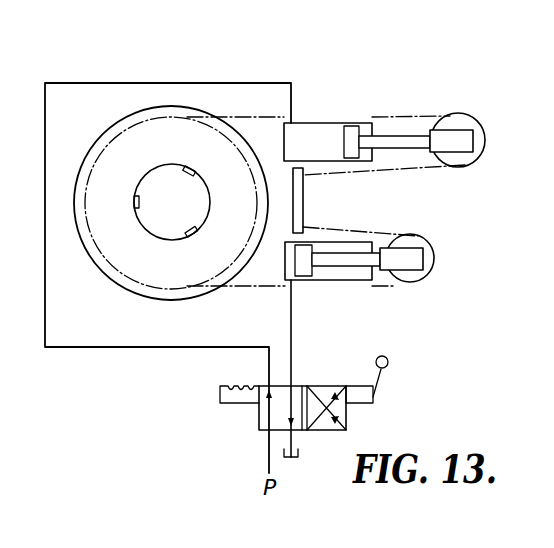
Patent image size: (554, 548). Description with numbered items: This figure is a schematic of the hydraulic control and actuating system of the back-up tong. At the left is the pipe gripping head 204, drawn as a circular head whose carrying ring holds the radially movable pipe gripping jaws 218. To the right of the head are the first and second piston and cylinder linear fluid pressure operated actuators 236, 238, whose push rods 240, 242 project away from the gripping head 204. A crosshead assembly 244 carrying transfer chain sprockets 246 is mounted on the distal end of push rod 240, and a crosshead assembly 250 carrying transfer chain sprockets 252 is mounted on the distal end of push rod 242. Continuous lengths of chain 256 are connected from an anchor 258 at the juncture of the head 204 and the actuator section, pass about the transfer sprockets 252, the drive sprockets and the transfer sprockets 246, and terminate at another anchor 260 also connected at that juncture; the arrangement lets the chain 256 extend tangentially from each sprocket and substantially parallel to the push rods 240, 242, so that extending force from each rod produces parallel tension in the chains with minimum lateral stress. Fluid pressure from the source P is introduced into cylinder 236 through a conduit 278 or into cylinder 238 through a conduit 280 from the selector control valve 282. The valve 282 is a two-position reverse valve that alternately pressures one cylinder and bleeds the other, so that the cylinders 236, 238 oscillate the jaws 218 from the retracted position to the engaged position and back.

The pipe gripping head 204 is at (141, 130).
The pipe gripping jaws 218 is at (138, 200).
The conduit 278 is at (45, 133).
The continuous lengths of chain 256 is at (245, 117).
The first piston and cylinder linear fluid pressure operated actuator 236 is at (317, 122).
The push rod 240 is at (402, 133).
The crosshead assembly 244 is at (457, 138).
The transfer chain sprockets 246 is at (483, 138).
The second piston and cylinder linear fluid pressure operated actuator 238 is at (337, 278).
The push rod 242 is at (367, 273).
The crosshead assembly 250 is at (403, 257).
The transfer chain sprockets 252 is at (437, 255).
The anchor 258 is at (303, 227).
The anchor 260 is at (303, 175).
The conduit 280 is at (291, 350).
The selector control valve 282 is at (257, 427).